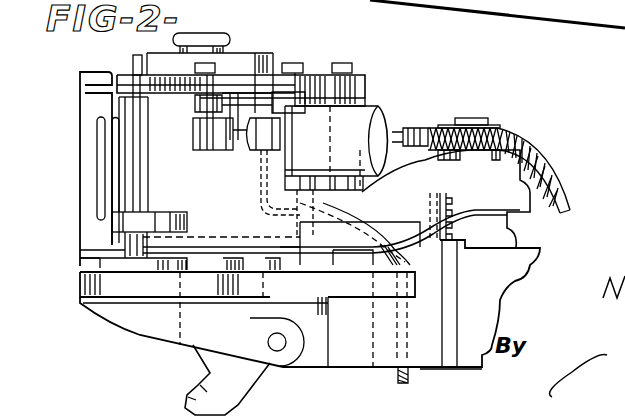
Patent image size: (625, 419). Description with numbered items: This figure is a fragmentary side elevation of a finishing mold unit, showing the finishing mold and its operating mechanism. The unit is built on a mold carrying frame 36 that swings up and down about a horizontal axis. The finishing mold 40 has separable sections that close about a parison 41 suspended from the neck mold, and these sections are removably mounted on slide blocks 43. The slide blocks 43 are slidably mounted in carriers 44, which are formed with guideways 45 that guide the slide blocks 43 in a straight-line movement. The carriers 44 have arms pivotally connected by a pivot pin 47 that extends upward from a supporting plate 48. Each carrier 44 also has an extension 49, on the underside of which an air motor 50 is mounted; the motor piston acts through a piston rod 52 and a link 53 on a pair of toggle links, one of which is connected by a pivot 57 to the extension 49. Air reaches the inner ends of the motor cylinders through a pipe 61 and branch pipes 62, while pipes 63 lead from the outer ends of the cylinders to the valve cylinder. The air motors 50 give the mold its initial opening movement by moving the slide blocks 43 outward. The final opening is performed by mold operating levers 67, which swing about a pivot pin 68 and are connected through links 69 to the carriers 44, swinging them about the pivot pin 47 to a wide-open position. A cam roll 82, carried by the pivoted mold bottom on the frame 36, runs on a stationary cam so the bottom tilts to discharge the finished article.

The mold carrying frame 36 is at (356, 360).
The finishing mold 40 is at (150, 62).
The parison 41 is at (218, 37).
The slide blocks 43 is at (108, 192).
The carriers 44 is at (88, 167).
The guideways 45 is at (103, 243).
The pivot pin 47 is at (366, 190).
The supporting plate 48 is at (366, 292).
The extension 49 is at (252, 80).
The air motor 50 is at (378, 112).
The piston rod 52 is at (265, 152).
The link 53 is at (216, 150).
The pivot 57 is at (190, 118).
The pipe 61 is at (268, 337).
The branch pipes 62 is at (263, 190).
The pipes 63 is at (538, 143).
The mold operating levers 67 is at (482, 180).
The pivot pin 68 is at (478, 120).
The links 69 is at (160, 216).
The cam roll 82 is at (186, 396).